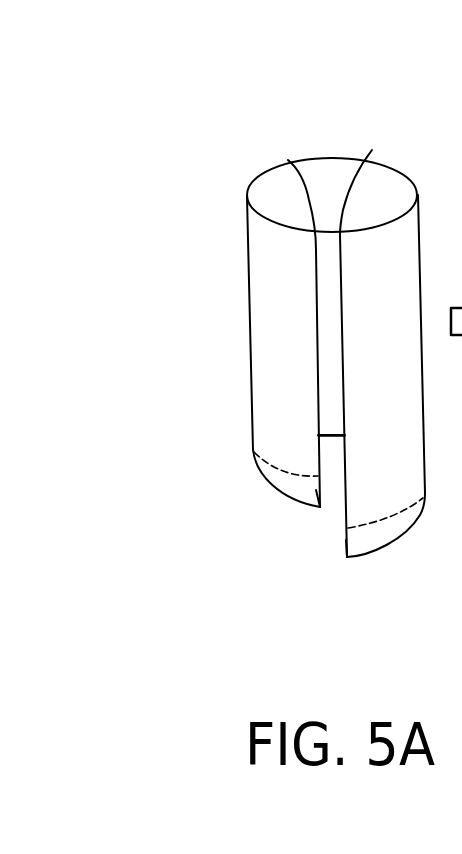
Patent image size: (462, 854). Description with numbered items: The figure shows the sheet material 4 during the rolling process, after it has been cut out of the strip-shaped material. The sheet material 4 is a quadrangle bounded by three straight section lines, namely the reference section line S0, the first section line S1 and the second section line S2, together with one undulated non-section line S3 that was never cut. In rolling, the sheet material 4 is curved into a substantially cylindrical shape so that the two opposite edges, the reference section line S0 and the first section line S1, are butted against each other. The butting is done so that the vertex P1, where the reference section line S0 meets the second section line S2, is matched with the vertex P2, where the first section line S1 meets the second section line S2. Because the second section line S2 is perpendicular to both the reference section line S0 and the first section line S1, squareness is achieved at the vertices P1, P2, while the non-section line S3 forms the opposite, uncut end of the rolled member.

The sheet material 4 is at (250, 355).
The vertex P1 is at (372, 150).
The vertex P2 is at (288, 160).
The reference section line S0 is at (347, 549).
The first section line S1 is at (320, 492).
The second section line S2 is at (310, 160).
The non-section line S3 is at (283, 497).